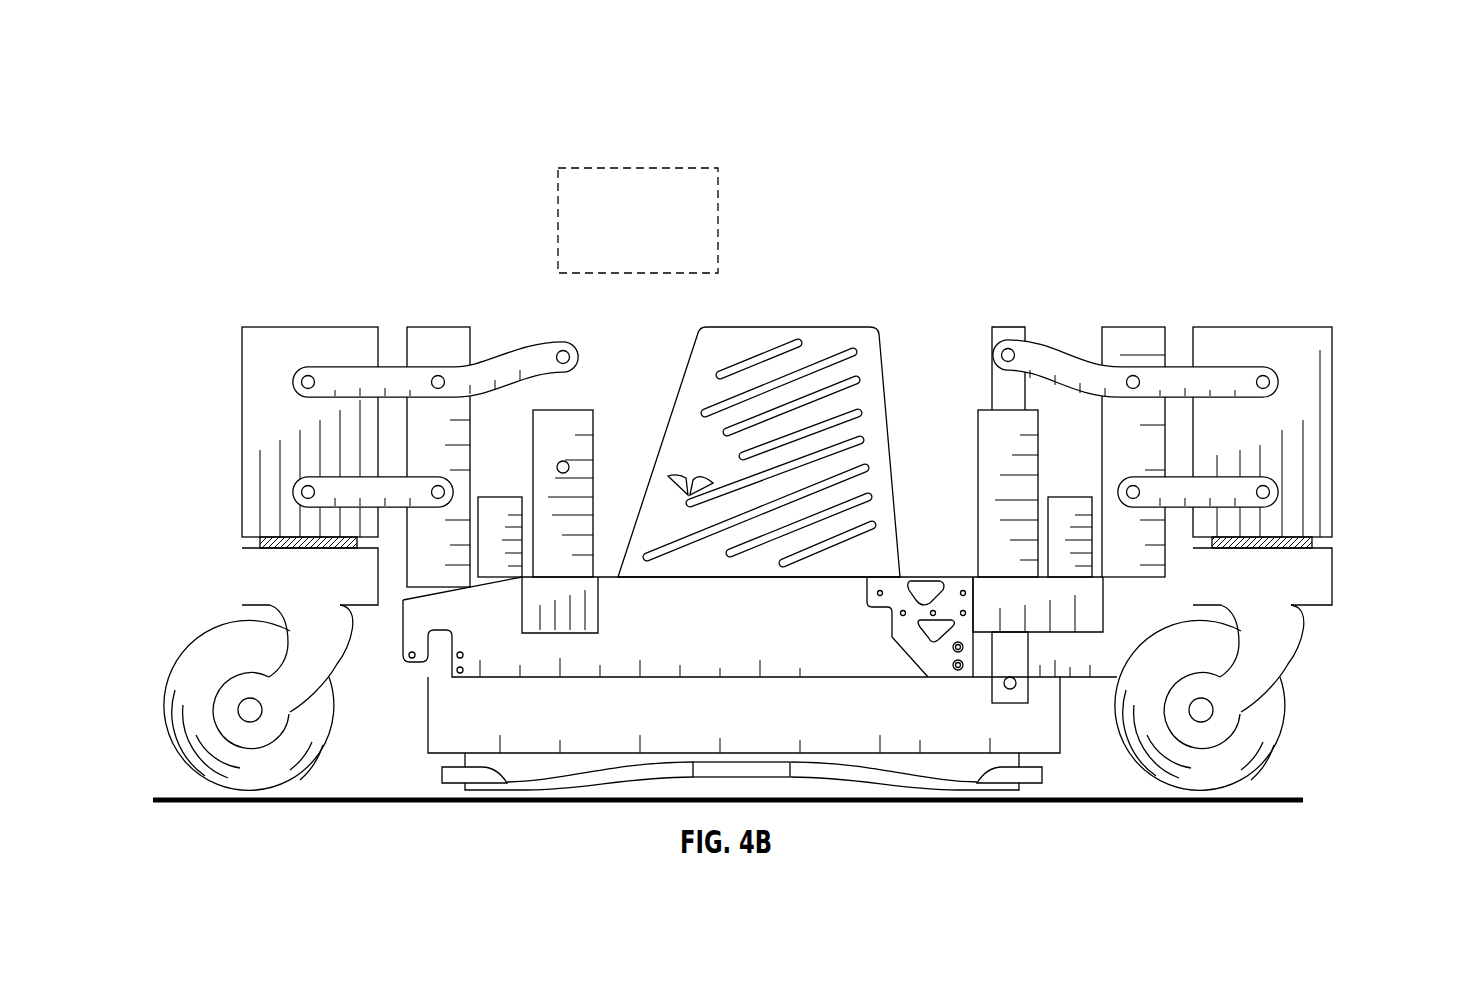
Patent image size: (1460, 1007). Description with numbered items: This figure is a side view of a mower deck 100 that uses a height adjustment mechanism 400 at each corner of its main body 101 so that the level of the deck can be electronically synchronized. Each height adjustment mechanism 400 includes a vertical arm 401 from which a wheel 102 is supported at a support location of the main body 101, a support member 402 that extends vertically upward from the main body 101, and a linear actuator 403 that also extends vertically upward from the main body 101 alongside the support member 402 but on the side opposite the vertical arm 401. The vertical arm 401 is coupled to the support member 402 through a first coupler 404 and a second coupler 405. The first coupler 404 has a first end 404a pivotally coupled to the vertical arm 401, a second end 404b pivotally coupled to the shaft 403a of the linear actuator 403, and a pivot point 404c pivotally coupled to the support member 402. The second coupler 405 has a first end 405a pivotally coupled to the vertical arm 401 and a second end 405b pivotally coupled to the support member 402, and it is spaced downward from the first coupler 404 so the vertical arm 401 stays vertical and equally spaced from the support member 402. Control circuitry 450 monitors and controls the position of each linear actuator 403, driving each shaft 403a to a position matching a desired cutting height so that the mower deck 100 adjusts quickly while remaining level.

The mower deck 100 is at (420, 190).
The main body 101 is at (1063, 775).
The wheel 102 is at (192, 767).
The height adjustment mechanism 400 is at (230, 300).
The vertical arm 401 is at (1340, 330).
The support member 402 is at (1117, 327).
The linear actuator 403 is at (975, 410).
The shaft 403a is at (987, 337).
The first coupler 404 is at (1210, 360).
The first end 404a is at (1285, 380).
The second end 404b is at (1005, 335).
The pivot point 404c is at (1140, 365).
The second coupler 405 is at (1253, 517).
The first end 405a is at (1285, 477).
The second end 405b is at (1115, 492).
The control circuitry 450 is at (638, 220).